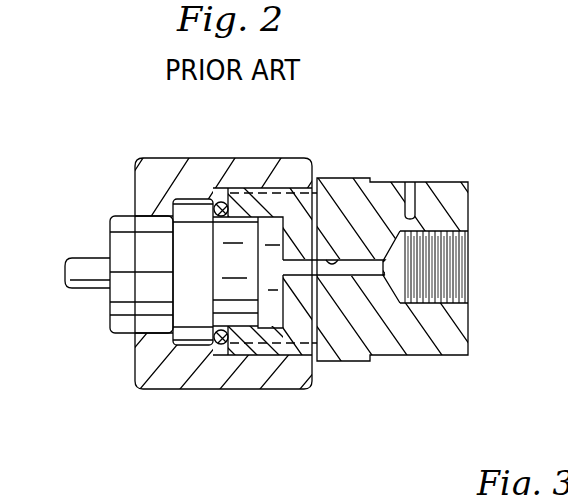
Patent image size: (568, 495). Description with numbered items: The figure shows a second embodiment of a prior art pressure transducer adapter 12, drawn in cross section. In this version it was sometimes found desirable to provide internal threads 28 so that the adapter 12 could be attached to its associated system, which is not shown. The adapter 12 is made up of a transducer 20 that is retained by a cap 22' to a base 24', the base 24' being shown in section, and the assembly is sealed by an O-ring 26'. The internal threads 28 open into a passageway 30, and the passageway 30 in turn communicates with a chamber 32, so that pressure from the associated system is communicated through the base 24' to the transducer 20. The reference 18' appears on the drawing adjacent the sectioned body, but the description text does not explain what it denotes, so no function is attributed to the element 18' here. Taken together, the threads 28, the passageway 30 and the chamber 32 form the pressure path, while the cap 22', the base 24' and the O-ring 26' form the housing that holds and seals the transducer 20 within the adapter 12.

The adapter 12 is at (408, 154).
The connector body 18' is at (316, 306).
The transducer 20 is at (128, 334).
The cap 22' is at (259, 303).
The base 24' is at (451, 304).
The O-ring 26' is at (162, 331).
The internal threads 28 is at (440, 240).
The passageway 30 is at (331, 261).
The chamber 32 is at (270, 240).